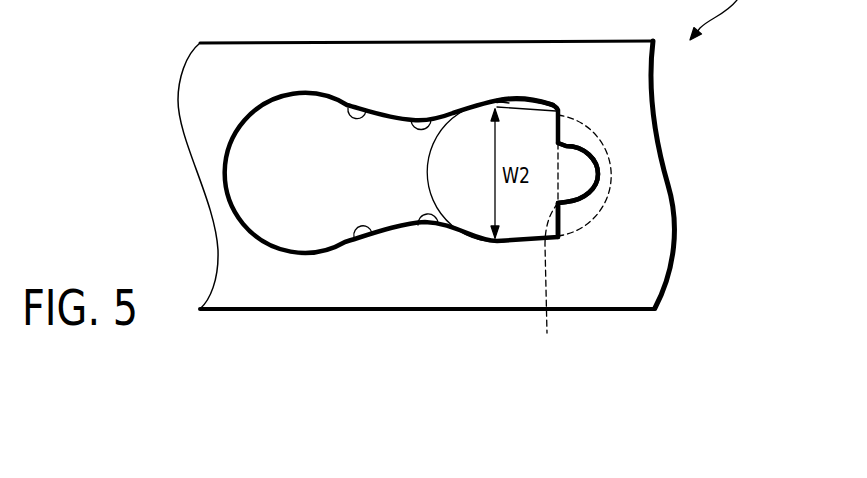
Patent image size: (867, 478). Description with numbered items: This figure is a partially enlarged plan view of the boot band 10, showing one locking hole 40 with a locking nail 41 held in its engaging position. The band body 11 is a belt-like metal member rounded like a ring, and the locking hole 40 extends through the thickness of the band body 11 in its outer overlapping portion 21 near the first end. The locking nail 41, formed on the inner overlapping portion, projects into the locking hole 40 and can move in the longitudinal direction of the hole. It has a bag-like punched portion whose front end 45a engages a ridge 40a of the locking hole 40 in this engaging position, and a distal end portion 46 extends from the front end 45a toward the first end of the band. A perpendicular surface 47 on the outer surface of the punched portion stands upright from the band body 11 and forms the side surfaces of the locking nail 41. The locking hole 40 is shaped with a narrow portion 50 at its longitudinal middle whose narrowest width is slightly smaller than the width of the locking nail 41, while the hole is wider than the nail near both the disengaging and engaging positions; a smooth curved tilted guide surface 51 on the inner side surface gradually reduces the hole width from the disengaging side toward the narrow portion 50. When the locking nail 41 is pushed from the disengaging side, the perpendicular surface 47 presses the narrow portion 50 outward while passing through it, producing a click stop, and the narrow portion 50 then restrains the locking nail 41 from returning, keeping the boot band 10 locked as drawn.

The boot band 10 is at (732, 239).
The band body 11 is at (444, 203).
The outer overlapping portion 21 is at (414, 295).
The locking hole 40 is at (250, 168).
The ridge 40a is at (568, 241).
The locking nail 41 is at (530, 126).
The front end 45a is at (560, 214).
The distal end portion 46 is at (582, 175).
The perpendicular surface 47 is at (475, 105).
The narrow portion 50 is at (431, 118).
The tilted guide surface 51 is at (349, 106).